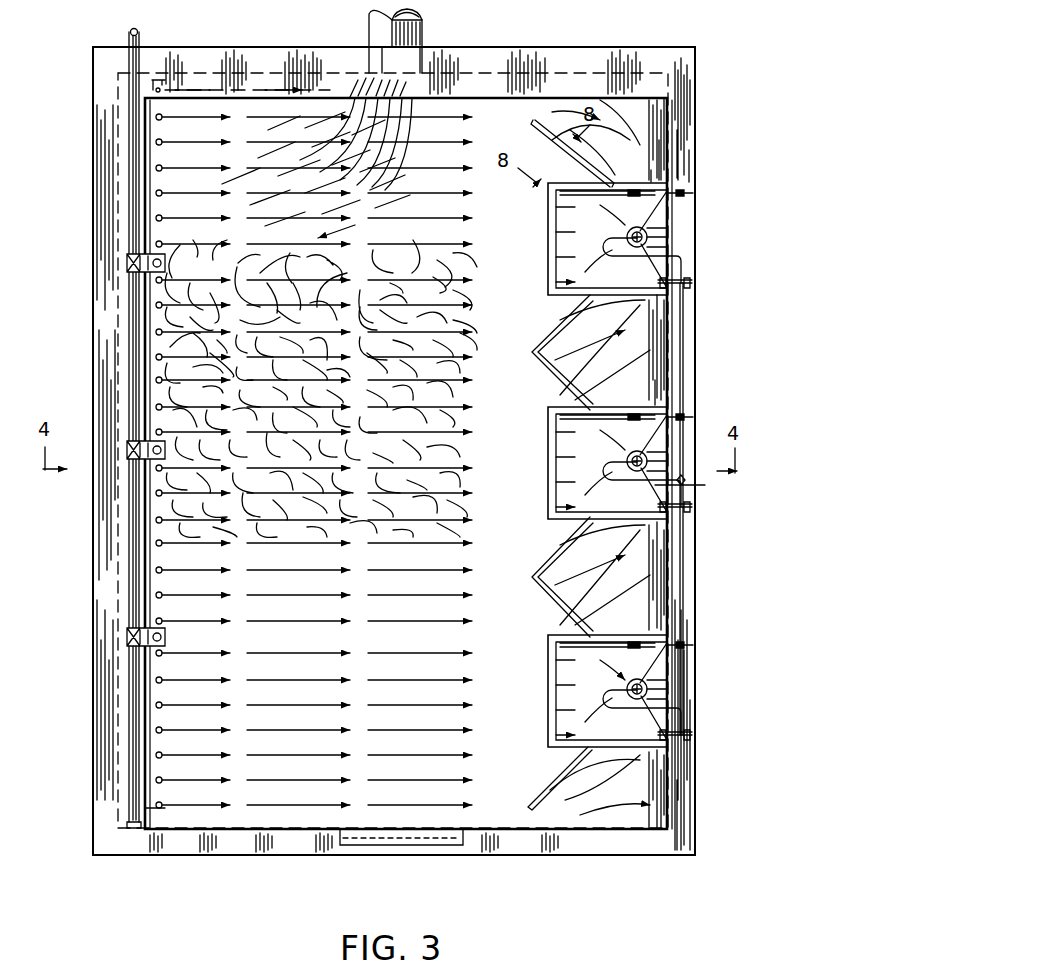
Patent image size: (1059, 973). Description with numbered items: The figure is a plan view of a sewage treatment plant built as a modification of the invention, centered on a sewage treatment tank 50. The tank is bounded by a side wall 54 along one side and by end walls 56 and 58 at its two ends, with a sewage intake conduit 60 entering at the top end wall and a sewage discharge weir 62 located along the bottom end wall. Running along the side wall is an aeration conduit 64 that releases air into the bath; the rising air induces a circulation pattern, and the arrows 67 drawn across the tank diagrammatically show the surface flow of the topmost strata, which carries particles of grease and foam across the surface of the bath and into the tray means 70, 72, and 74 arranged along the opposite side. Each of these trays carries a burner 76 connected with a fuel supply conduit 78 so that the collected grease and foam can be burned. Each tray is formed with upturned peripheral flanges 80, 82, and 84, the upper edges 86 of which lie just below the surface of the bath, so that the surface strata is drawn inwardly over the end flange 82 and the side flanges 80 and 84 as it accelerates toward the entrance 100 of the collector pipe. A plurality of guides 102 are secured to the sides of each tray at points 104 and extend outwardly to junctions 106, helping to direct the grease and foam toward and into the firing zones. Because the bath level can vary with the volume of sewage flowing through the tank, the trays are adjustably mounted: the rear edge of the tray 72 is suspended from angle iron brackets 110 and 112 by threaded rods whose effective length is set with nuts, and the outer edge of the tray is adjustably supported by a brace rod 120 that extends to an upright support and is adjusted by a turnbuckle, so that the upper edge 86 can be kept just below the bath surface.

The sewage treatment tank 50 is at (555, 47).
The side wall 54 is at (110, 352).
The end wall 56 is at (258, 64).
The end wall 58 is at (238, 845).
The sewage intake conduit 60 is at (420, 33).
The sewage discharge weir 62 is at (400, 847).
The aeration conduit 64 is at (150, 792).
The arrows 67 is at (220, 470).
The tray means 70 is at (548, 208).
The tray means 72 is at (548, 459).
The tray means 74 is at (548, 695).
The burner 76 is at (627, 237).
The fuel supply conduit 78 is at (683, 306).
The upturned peripheral flange 80 is at (610, 188).
The upturned peripheral flange 82 is at (548, 229).
The upturned peripheral flange 84 is at (560, 288).
The upper edge 86 is at (548, 258).
The entrance 100 is at (641, 228).
The guides 102 is at (545, 140).
The securing points 104 is at (592, 297).
The junctions 106 is at (534, 352).
The angle iron bracket 110 is at (688, 284).
The angle iron bracket 112 is at (676, 193).
The brace rod 120 is at (645, 191).